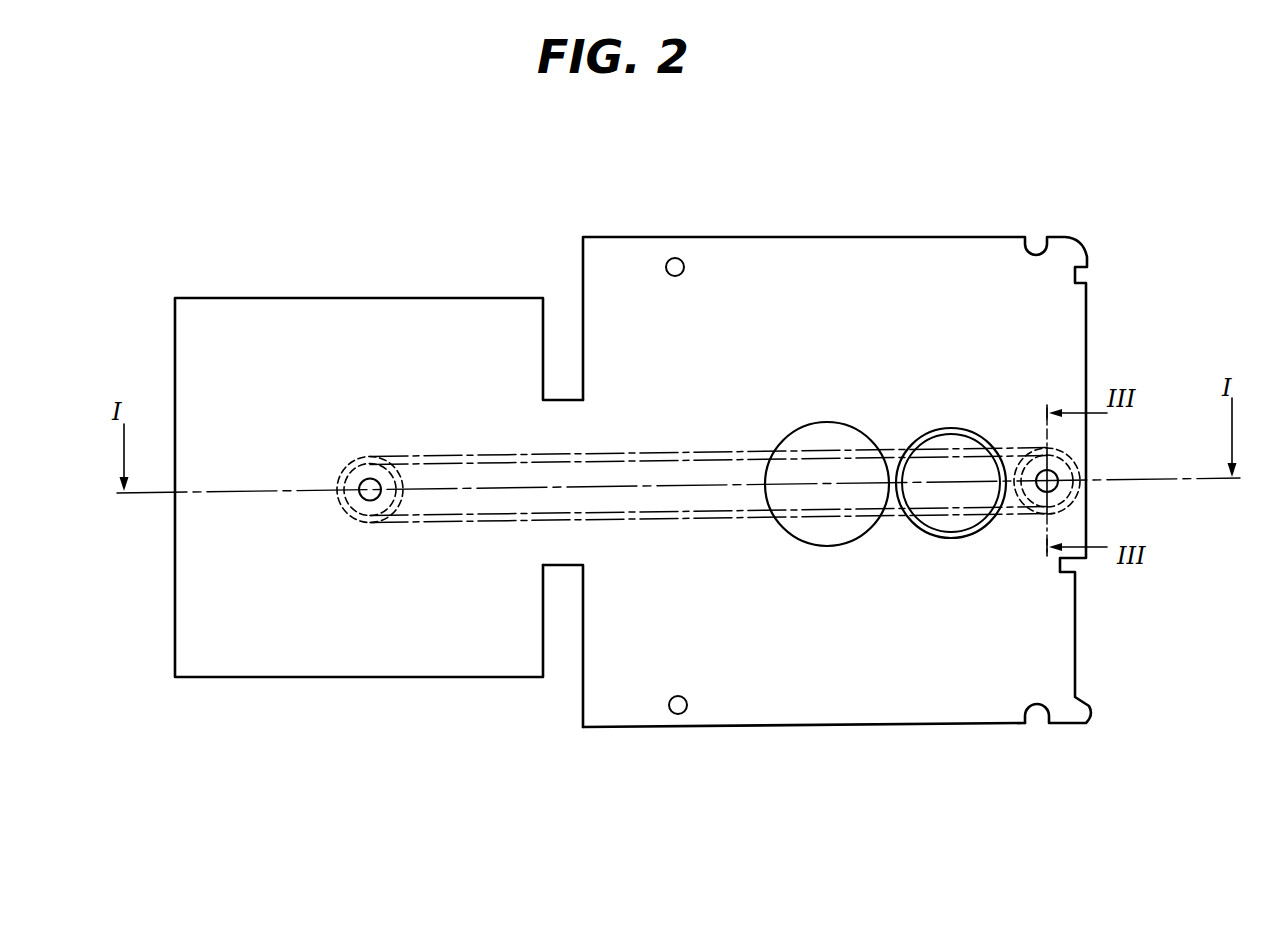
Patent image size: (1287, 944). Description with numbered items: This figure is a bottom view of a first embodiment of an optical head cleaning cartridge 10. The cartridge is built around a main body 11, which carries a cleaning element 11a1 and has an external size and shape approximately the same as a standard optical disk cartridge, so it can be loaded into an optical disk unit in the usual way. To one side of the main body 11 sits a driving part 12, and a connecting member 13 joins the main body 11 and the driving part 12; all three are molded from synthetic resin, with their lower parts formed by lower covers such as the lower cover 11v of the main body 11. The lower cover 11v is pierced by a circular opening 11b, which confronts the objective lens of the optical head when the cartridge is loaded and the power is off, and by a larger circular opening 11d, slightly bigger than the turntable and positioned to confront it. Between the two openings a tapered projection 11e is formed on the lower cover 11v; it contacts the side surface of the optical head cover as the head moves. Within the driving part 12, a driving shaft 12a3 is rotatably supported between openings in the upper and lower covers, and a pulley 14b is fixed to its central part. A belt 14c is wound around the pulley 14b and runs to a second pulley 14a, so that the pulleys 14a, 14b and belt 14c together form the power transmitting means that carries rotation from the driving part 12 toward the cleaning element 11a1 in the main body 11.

The optical head cleaning cartridge 10 is at (757, 161).
The main body 11 is at (956, 224).
The cleaning element 11a1 is at (1053, 474).
The circular opening 11b is at (1035, 507).
The circular opening 11d is at (845, 543).
The projection 11e is at (945, 525).
The lower cover 11v is at (904, 705).
The driving part 12 is at (328, 663).
The driving shaft 12a3 is at (380, 478).
The connecting member 13 is at (566, 618).
The pulley 14a is at (1095, 517).
The pulley 14b is at (352, 513).
The belt 14c is at (676, 519).